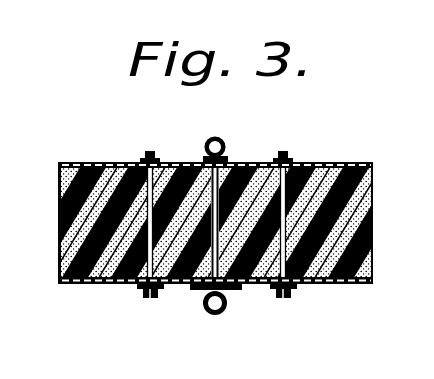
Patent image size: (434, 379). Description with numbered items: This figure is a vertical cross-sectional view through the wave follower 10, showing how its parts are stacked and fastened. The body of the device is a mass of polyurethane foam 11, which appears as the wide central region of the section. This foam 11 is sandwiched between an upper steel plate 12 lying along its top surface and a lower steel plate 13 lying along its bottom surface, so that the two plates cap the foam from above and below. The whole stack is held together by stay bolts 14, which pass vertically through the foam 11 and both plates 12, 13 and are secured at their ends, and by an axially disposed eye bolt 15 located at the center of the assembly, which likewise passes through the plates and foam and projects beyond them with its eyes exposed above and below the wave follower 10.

The laminated assembly 10 is at (223, 218).
The mass of polyurethane foam 11 is at (373, 213).
The upper steel plate 12 is at (358, 163).
The lower steel plate 13 is at (343, 286).
The stay bolts 14 is at (172, 143).
The eye bolt 15 is at (225, 145).